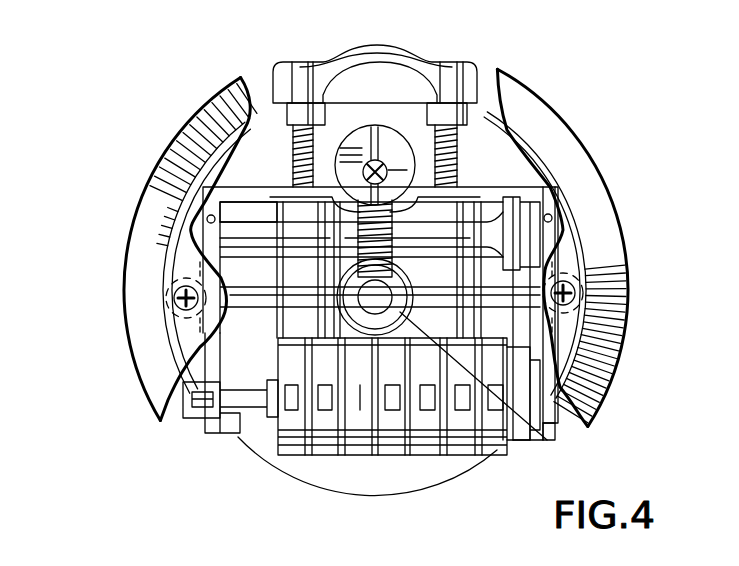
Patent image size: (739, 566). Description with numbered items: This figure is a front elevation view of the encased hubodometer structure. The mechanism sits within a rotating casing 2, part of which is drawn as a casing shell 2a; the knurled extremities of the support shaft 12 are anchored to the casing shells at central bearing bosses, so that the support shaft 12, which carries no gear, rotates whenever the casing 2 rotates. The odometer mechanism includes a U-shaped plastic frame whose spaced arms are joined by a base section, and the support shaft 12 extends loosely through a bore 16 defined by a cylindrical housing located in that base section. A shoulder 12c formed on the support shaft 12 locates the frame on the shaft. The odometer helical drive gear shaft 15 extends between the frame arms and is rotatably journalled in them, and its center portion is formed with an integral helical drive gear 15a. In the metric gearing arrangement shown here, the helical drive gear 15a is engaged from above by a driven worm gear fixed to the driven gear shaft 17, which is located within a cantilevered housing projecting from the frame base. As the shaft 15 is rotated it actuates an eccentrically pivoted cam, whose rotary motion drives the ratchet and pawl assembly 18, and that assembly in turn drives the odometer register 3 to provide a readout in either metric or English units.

The casing 2 is at (125, 326).
The casing shell 2a is at (147, 237).
The odometer register 3 is at (325, 447).
The support shaft 12 is at (343, 265).
The shoulder 12c is at (547, 440).
The odometer helical drive gear shaft 15 is at (300, 210).
The helical drive gear 15a is at (395, 222).
The bore 16 is at (263, 232).
The driven gear shaft 17 is at (370, 167).
The ratchet and pawl assembly 18 is at (533, 327).